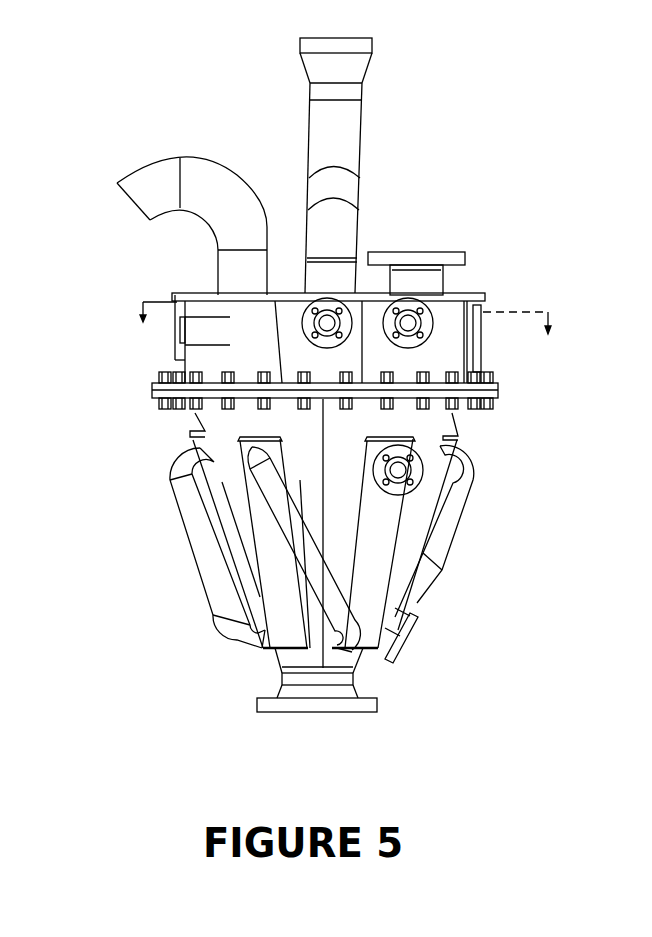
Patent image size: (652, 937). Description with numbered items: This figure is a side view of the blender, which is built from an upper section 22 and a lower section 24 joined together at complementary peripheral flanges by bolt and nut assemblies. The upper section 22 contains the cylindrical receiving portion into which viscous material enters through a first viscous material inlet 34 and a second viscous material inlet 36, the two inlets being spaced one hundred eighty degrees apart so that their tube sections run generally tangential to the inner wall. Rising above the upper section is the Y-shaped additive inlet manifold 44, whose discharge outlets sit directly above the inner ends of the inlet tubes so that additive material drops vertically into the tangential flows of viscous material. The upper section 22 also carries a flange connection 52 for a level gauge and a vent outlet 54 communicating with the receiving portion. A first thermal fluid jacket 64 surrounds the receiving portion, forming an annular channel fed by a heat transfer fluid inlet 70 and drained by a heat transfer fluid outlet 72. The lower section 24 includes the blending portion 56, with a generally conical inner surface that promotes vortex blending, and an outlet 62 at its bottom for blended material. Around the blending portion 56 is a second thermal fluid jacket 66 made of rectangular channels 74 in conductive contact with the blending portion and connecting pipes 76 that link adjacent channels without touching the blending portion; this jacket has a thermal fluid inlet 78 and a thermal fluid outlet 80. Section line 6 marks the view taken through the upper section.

The upper section 22 is at (498, 291).
The lower section 24 is at (337, 589).
The section line 6 is at (342, 333).
The first viscous material inlet 34 is at (485, 341).
The second viscous material inlet 36 is at (173, 340).
The additive inlet manifold 44 is at (372, 122).
The flange connection 52 is at (460, 252).
The vent outlet 54 is at (230, 173).
The blending portion 56 is at (193, 430).
The outlet 62 is at (295, 715).
The first thermal fluid jacket 64 is at (276, 330).
The second thermal fluid jacket 66 is at (217, 638).
The heat transfer fluid inlet 70 is at (424, 326).
The heat transfer fluid outlet 72 is at (322, 338).
The rectangular channels 74 is at (223, 512).
The connecting pipes 76 is at (182, 495).
The thermal fluid inlet 78 is at (413, 645).
The thermal fluid outlet 80 is at (412, 463).